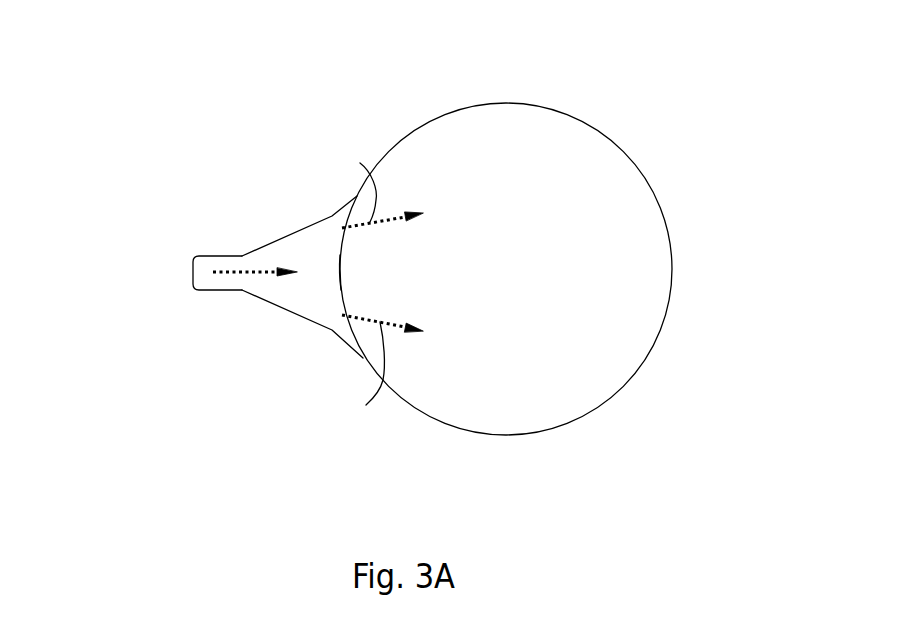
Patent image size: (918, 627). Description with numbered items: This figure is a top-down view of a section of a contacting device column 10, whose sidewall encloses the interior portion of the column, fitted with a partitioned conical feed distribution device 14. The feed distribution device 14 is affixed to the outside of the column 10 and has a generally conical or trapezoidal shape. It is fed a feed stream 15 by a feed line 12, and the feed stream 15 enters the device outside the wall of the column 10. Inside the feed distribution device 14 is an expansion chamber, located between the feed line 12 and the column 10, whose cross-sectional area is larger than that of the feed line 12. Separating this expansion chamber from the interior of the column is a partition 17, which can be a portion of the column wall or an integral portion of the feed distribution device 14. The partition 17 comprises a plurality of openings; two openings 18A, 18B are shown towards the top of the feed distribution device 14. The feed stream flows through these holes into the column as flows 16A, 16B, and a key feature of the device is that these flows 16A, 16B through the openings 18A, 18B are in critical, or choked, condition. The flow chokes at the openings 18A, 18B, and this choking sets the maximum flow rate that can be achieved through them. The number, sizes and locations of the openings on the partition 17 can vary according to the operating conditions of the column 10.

The contacting device column 10 is at (653, 195).
The feed line 12 is at (193, 290).
The feed distribution device 14 is at (283, 313).
The feed stream 15 is at (233, 270).
The feed flow through upper opening 16A is at (360, 163).
The feed flow through second upper opening 16B is at (366, 405).
The partition 17 is at (338, 278).
The first opening 18A is at (328, 221).
The second opening 18B is at (327, 332).